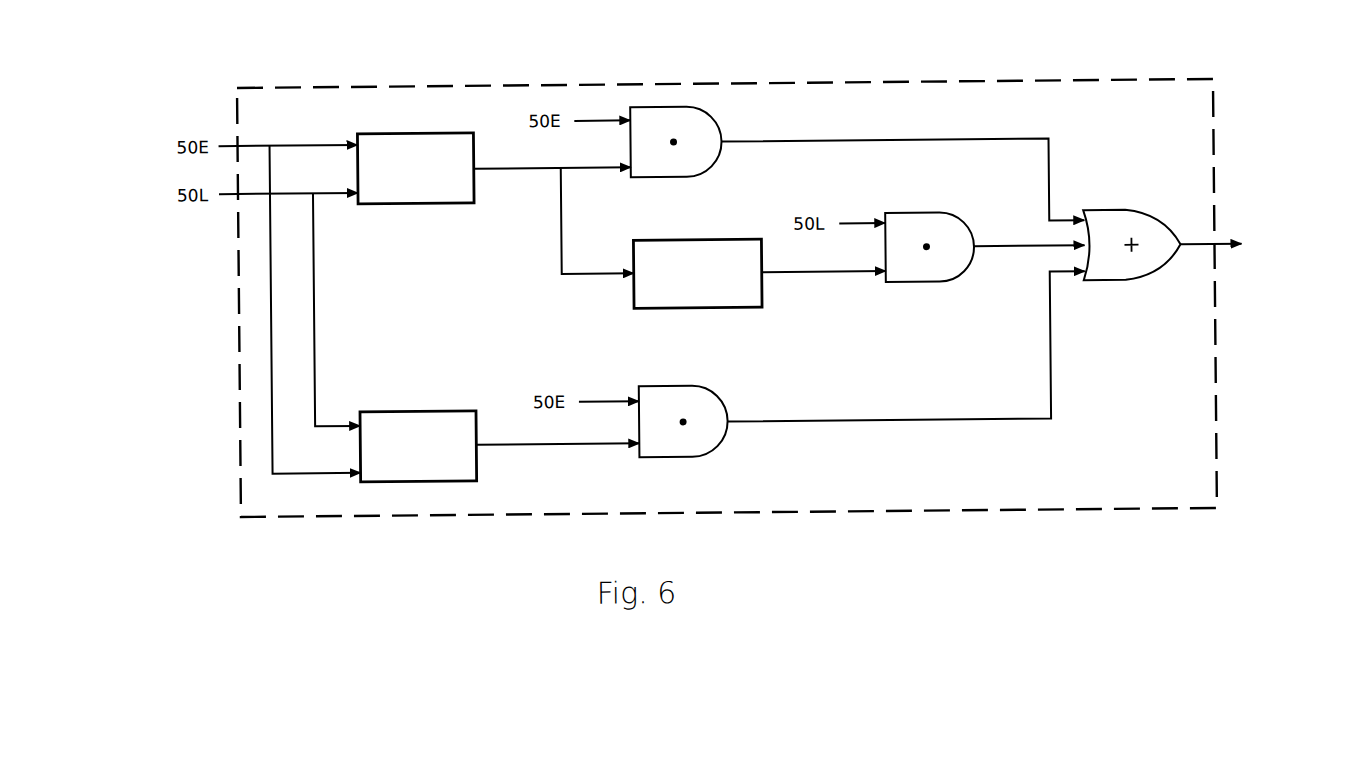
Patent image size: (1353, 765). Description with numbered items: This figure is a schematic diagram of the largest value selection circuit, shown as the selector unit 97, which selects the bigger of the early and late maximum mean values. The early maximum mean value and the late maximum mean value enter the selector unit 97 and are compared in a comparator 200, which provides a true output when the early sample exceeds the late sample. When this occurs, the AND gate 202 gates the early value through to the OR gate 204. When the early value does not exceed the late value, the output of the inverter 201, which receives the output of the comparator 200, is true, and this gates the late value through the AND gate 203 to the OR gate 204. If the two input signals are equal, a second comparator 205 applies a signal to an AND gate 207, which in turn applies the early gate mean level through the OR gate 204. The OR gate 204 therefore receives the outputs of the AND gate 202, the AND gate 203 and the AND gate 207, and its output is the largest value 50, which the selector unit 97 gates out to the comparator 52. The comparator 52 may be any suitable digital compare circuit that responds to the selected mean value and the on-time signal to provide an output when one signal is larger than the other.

The selection circuit 97 is at (858, 88).
The comparator 200 is at (410, 205).
The inverter 201 is at (696, 246).
The AND gate 202 is at (706, 167).
The AND gate 203 is at (953, 245).
The OR gate 204 is at (1136, 221).
The comparator 205 is at (385, 413).
The AND gate 207 is at (710, 412).
The largest value 50 is at (1216, 255).
The comparator 52 is at (1289, 259).